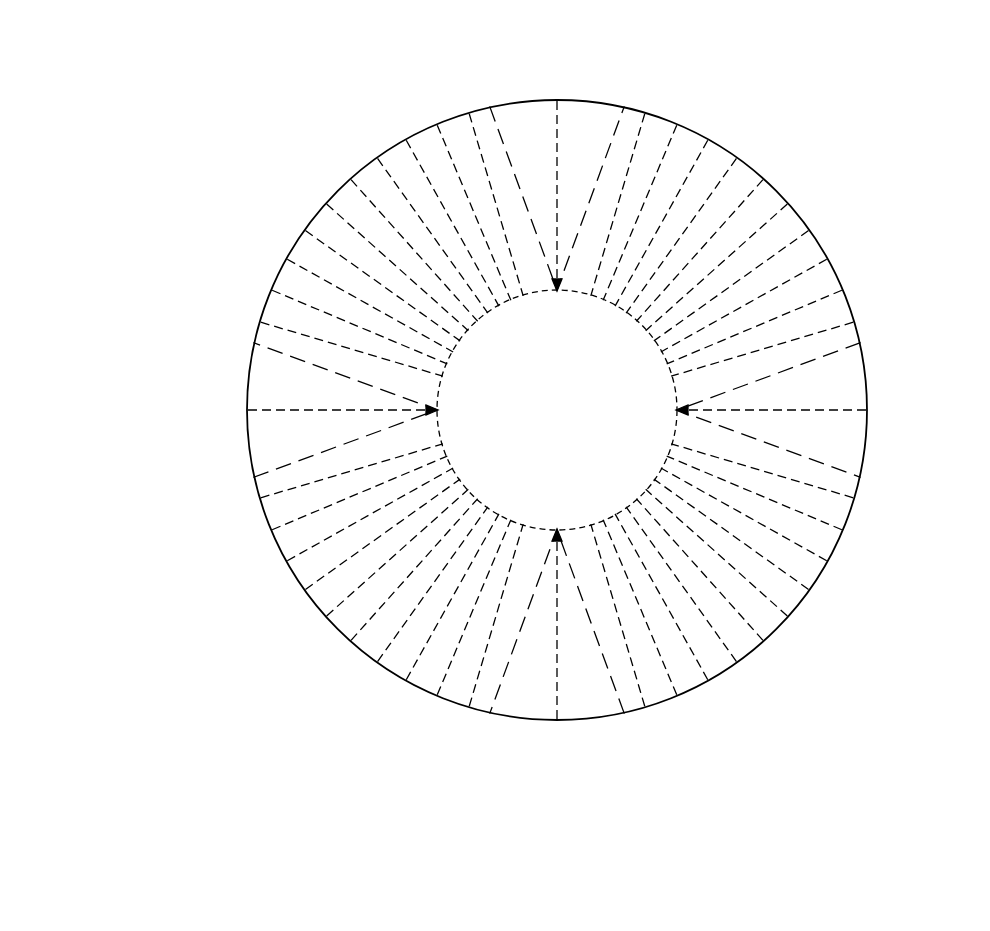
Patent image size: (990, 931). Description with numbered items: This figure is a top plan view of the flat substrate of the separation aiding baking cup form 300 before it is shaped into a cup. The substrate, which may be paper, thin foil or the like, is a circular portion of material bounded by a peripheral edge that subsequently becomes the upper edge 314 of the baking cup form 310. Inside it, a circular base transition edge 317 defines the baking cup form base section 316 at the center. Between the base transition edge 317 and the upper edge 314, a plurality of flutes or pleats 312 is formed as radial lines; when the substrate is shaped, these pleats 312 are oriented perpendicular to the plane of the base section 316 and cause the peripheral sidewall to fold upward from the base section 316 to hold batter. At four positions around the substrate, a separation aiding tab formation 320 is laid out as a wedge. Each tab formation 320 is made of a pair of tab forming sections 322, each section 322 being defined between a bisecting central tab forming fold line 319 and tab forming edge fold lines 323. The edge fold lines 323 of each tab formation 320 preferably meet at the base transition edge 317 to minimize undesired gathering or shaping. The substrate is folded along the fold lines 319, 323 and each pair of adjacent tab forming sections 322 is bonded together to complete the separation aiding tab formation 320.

The separation aiding baking cup form 300 is at (258, 140).
The baking cup form 310 is at (326, 642).
The pleats 312 is at (750, 577).
The upper edge 314 is at (360, 173).
The baking cup form base section 316 is at (580, 429).
The base transition edge 317 is at (460, 343).
The central tab forming fold line 319 is at (557, 688).
The separation aiding tab formation 320 is at (626, 102).
The tab forming section 322 is at (525, 693).
The tab forming edge fold lines 323 is at (507, 662).